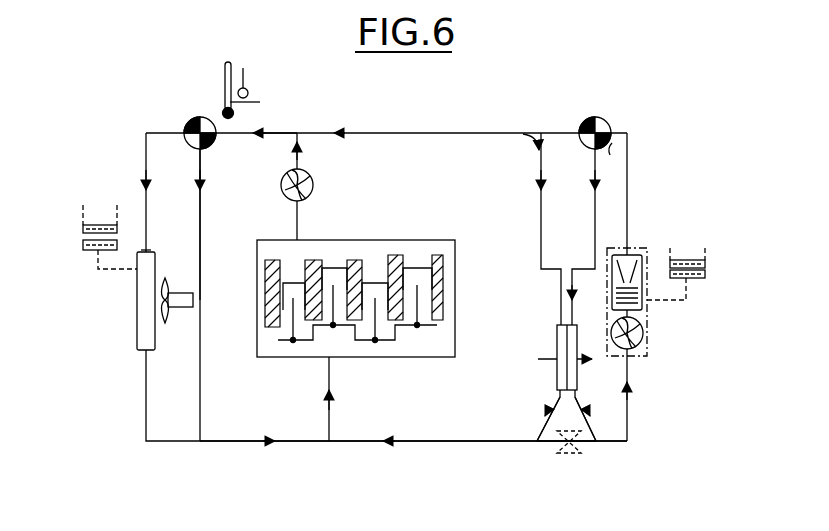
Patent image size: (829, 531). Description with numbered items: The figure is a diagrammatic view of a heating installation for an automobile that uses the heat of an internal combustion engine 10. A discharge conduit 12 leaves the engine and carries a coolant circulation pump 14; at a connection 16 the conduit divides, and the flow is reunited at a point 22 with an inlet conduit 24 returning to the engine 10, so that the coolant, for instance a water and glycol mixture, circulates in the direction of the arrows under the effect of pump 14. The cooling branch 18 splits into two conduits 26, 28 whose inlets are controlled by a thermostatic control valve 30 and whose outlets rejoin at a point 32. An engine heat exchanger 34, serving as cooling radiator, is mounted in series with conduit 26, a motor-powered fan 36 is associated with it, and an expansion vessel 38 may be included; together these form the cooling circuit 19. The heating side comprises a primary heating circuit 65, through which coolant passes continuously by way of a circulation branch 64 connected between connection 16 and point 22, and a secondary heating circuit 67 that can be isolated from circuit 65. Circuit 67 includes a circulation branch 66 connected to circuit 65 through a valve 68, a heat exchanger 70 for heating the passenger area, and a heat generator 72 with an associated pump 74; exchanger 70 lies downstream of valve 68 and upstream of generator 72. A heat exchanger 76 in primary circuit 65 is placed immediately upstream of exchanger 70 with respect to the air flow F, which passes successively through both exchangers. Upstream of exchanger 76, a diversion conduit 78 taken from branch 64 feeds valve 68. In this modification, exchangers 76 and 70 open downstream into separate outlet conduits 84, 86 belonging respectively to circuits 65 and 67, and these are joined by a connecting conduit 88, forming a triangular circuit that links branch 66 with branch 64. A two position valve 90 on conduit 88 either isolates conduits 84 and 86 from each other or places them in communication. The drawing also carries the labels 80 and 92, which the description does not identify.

The internal combustion engine 10 is at (425, 360).
The discharge conduit 12 is at (297, 222).
The coolant circulation pump 14 is at (313, 186).
The connection 16 is at (297, 130).
The cooling branch 18 is at (290, 130).
The cooling circuit 19 is at (253, 224).
The point 22 is at (329, 443).
The inlet conduit 24 is at (331, 418).
The conduit 26 is at (145, 168).
The conduit 28 is at (200, 165).
The thermostatic control valve 30 is at (191, 121).
The point 32 is at (200, 443).
The engine heat exchanger 34 is at (137, 329).
The motor-powered fan 36 is at (178, 314).
The expansion vessel 38 is at (83, 229).
The circulation branch 64 is at (393, 132).
The primary heating circuit 65 is at (513, 259).
The circulation branch 66 is at (628, 410).
The secondary heating circuit 67 is at (620, 419).
The valve 68 is at (600, 120).
The heat exchanger 70 is at (578, 380).
The heat generator 72 is at (640, 266).
The pump 74 is at (644, 335).
The heat exchanger 76 is at (559, 372).
The diversion conduit 78 is at (560, 131).
The bypass line 80 is at (540, 131).
The outlet conduit 84 is at (540, 438).
The outlet conduit 86 is at (594, 438).
The connecting conduit 88 is at (551, 445).
The two position valve 90 is at (569, 455).
The level switch 92 is at (705, 268).